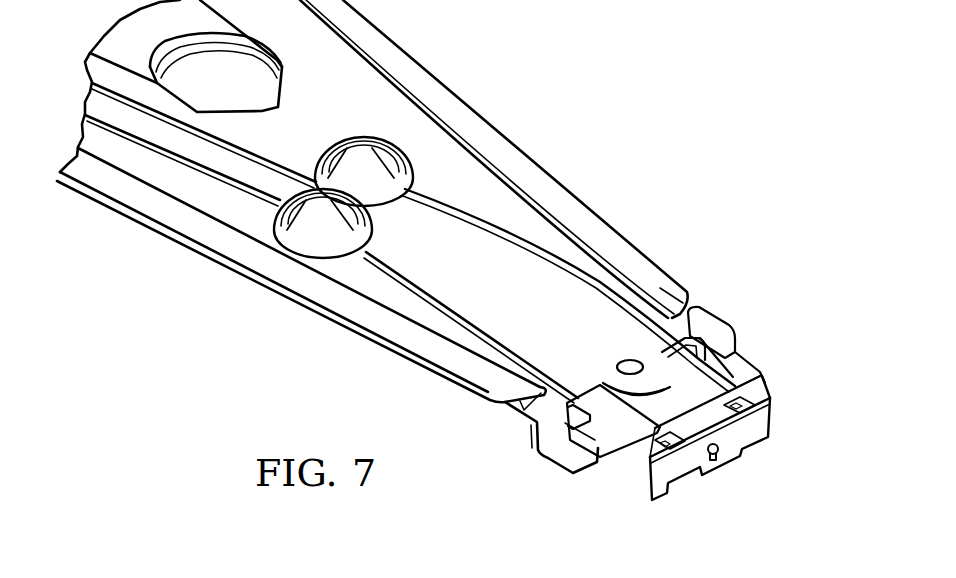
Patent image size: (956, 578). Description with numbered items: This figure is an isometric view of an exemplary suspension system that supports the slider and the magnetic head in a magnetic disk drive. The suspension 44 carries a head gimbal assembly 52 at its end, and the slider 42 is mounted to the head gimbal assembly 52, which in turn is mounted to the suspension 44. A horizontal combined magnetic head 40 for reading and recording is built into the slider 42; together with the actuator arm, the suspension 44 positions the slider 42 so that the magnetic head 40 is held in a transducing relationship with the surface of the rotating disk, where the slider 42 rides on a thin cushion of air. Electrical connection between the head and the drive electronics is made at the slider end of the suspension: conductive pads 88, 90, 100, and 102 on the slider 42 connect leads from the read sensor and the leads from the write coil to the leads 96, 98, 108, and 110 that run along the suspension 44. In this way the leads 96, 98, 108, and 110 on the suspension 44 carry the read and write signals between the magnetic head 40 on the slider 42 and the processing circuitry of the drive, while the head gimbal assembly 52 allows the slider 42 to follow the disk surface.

The horizontal combined magnetic head 40 is at (719, 458).
The slider 42 is at (604, 475).
The suspension 44 is at (524, 150).
The head gimbal assembly 52 is at (668, 410).
The conductive pad 88 is at (648, 457).
The conductive pad 90 is at (744, 394).
The lead 96 is at (400, 288).
The lead 98 is at (585, 272).
The conductive pad 100 is at (667, 447).
The conductive pad 102 is at (738, 404).
The lead 108 is at (420, 290).
The lead 110 is at (500, 232).